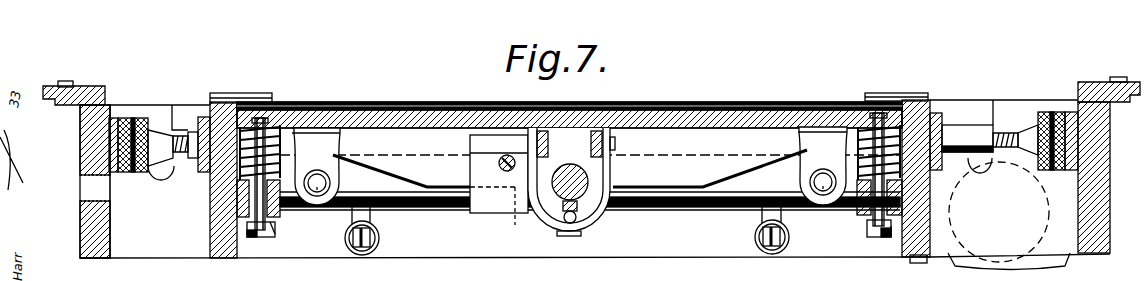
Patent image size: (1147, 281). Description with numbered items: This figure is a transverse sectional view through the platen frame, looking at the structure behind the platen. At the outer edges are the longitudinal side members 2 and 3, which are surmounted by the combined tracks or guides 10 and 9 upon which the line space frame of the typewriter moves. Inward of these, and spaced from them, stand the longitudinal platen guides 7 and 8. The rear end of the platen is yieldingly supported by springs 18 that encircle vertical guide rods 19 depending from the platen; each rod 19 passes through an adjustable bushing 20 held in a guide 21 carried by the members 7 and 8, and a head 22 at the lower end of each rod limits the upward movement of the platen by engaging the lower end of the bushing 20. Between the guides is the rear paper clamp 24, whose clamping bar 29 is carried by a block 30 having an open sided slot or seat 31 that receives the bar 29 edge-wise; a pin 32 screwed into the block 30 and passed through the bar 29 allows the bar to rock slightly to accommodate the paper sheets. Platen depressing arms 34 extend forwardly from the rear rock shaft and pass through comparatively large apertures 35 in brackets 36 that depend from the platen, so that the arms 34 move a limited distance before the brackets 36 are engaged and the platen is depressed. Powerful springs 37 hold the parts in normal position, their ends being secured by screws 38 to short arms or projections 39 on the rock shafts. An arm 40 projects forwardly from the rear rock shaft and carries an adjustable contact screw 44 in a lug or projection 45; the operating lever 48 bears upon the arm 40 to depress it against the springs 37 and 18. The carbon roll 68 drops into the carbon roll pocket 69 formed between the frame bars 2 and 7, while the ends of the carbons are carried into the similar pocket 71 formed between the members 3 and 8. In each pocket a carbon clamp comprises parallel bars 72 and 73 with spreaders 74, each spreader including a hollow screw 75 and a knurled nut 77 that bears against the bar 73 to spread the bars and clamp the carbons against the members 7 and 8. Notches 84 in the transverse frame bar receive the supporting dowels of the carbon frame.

The longitudinal side member 2 is at (88, 152).
The longitudinal side member 3 is at (1100, 192).
The longitudinal platen guide 7 is at (213, 238).
The longitudinal platen guide 8 is at (923, 233).
The combined track or guide 9 is at (1110, 82).
The combined track or guide 10 is at (80, 90).
The spring 18 is at (280, 140).
The vertical guide rod 19 is at (258, 173).
The adjustable bushing 20 is at (277, 222).
The guide 21 is at (260, 205).
The head 22 is at (253, 237).
The rear paper clamp 24 is at (247, 95).
The clamping bar 29 is at (420, 137).
The block 30 is at (493, 207).
The open sided slot or seat 31 is at (518, 214).
The pin 32 is at (503, 158).
The platen depressing arm 34 is at (315, 190).
The aperture 35 is at (330, 183).
The bracket 36 is at (340, 138).
The spring 37 is at (383, 237).
The screw 38 is at (360, 250).
The short arm or projection 39 is at (373, 213).
The arm 40 is at (593, 173).
The adjustable contact screw 44 is at (575, 220).
The lug or projection 45 is at (567, 236).
The operating lever 48 is at (592, 139).
The carbon roll 68 is at (1047, 203).
The carbon roll pocket 69 is at (990, 243).
The pocket 71 is at (136, 181).
The bar 72 is at (200, 118).
The bar 73 is at (112, 118).
The spreader 74 is at (1008, 127).
The hollow screw 75 is at (176, 136).
The knurled nut 77 is at (140, 118).
The notch 84 is at (152, 179).